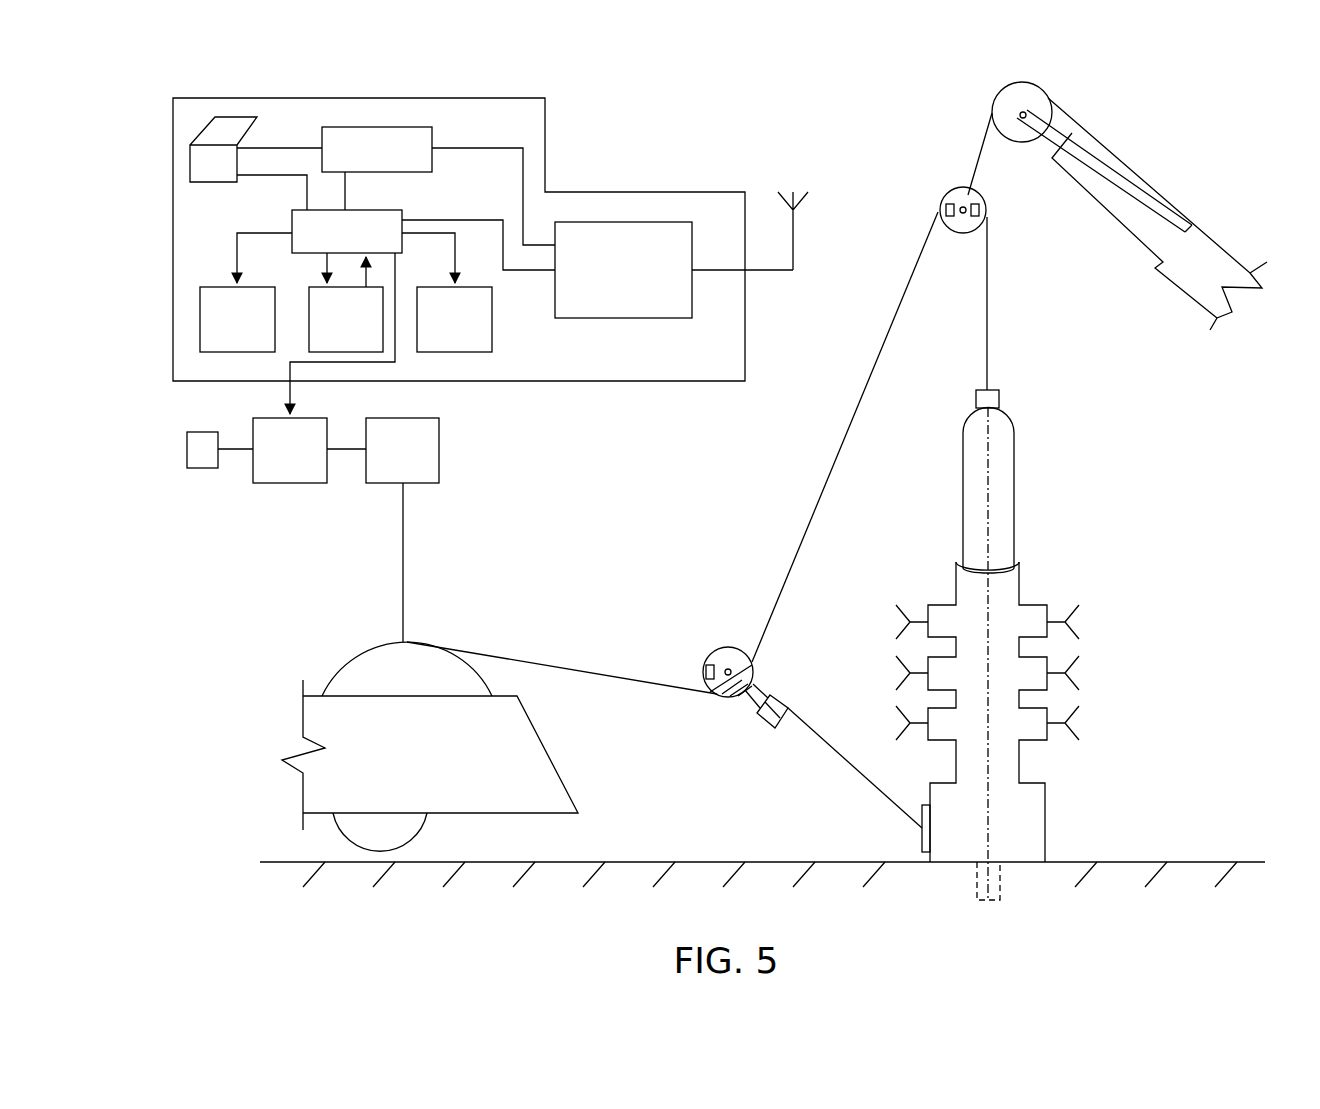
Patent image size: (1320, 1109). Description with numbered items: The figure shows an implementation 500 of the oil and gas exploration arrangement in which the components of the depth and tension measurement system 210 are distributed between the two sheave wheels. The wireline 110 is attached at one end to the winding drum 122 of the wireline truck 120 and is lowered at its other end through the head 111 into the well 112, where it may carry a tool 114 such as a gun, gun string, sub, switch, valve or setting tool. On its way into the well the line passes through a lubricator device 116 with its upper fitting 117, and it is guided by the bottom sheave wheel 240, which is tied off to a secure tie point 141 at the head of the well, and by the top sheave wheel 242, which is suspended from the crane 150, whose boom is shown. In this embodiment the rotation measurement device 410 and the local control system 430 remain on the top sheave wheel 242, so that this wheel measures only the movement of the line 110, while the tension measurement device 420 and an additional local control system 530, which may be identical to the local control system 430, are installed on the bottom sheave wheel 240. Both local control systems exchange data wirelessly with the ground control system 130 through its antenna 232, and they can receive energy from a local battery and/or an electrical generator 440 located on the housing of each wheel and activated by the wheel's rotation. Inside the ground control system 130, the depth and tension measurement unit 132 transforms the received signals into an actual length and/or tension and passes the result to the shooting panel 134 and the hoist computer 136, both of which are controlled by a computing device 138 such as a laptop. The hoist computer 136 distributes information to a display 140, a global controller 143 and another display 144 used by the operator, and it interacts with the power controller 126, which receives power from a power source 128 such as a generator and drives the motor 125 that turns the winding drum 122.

The depth and tension measurement system implementation 500 is at (845, 158).
The ground control system 130 is at (545, 145).
The computing device 138 is at (197, 128).
The shooting panel 134 is at (438, 186).
The hoist computer 136 is at (396, 312).
The display 140 is at (237, 319).
The global controller 143 is at (346, 319).
The display 144 is at (454, 319).
The depth and tension measurement unit 132 is at (674, 270).
The antenna 232 is at (795, 238).
The power controller 126 is at (292, 450).
The motor 125 is at (402, 530).
The power source 128 is at (200, 468).
The wireline truck 120 is at (292, 783).
The winding drum 122 is at (370, 648).
The bottom sheave wheel 240 is at (730, 647).
The electrical generator 440 is at (707, 662).
The additional local control system 530 is at (789, 684).
The tension measurement device 420 is at (748, 714).
The secure tie point 141 is at (922, 830).
The well 112 is at (1045, 822).
The tool 114 is at (1000, 900).
The head 111 is at (1045, 655).
The lubricator device 116 is at (1015, 495).
The stuffing box 117 is at (1000, 398).
The wireline 110 is at (990, 300).
The top sheave wheel 242 is at (955, 225).
The rotation measurement device 410 is at (940, 211).
The local control system 430 is at (985, 210).
The crane 150 is at (1180, 172).
The depth and tension measurement system 210 is at (1237, 485).